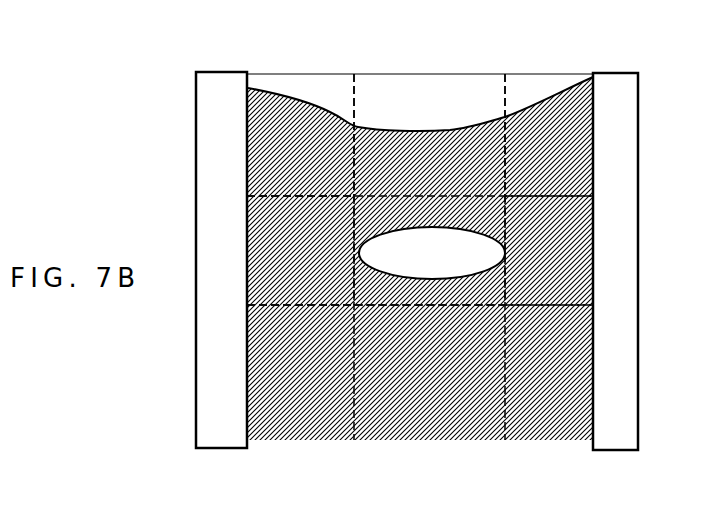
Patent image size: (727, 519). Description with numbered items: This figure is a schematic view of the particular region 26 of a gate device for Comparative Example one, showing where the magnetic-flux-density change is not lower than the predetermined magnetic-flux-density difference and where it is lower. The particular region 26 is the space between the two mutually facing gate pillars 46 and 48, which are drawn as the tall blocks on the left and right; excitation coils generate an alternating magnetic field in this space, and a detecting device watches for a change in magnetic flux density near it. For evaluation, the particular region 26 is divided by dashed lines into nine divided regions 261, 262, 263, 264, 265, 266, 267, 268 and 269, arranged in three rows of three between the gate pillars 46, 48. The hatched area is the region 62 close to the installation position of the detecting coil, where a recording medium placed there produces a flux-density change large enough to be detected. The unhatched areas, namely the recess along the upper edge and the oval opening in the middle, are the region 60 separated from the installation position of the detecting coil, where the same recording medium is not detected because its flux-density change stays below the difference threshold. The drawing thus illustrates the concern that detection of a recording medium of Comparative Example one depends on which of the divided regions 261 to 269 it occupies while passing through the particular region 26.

The particular region 26 is at (513, 74).
The divided region 261 is at (298, 73).
The divided region 262 is at (413, 73).
The divided region 263 is at (572, 73).
The divided region 264 is at (247, 253).
The divided region 265 is at (358, 292).
The divided region 266 is at (583, 290).
The divided region 267 is at (297, 430).
The divided region 268 is at (432, 430).
The divided region 269 is at (548, 430).
The gate pillar 46 is at (222, 72).
The gate pillar 48 is at (620, 73).
The region separated from the installation position of the detecting coil 60 is at (527, 95).
The region close to the installation position of the detecting coil 62 is at (560, 241).